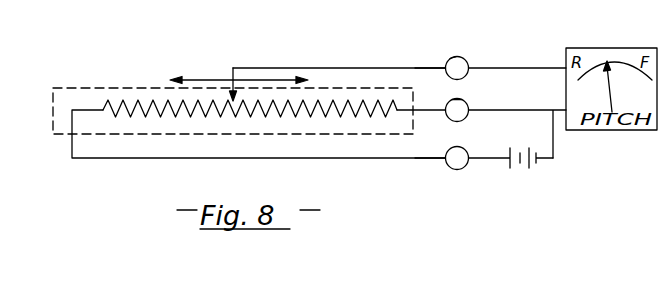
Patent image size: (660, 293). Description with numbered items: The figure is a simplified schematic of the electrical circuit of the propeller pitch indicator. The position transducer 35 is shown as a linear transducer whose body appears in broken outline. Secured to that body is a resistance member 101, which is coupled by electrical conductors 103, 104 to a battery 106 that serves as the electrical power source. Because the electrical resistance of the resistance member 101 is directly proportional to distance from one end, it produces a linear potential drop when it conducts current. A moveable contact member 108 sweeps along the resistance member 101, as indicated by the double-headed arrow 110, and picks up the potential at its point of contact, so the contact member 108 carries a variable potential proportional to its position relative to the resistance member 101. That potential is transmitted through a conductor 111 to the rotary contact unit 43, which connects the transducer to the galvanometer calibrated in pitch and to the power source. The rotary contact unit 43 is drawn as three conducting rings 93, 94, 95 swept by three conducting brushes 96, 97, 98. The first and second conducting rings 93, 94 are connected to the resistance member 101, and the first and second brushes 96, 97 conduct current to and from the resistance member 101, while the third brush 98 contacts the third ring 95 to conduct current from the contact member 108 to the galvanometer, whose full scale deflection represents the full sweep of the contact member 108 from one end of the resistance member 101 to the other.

The position transducer 35 is at (77, 88).
The rotary contact unit 43 is at (454, 52).
The first conducting ring 93 is at (445, 162).
The second conducting ring 94 is at (455, 99).
The third conducting ring 95 is at (445, 67).
The first conducting brush 96 is at (468, 167).
The second conducting brush 97 is at (468, 108).
The third conducting brush 98 is at (468, 66).
The resistance member 101 is at (128, 110).
The electrical conductor 103 is at (135, 158).
The electrical conductor 104 is at (422, 112).
The battery 106 is at (533, 172).
The moveable contact member 108 is at (231, 97).
The double-headed arrow 110 is at (192, 80).
The conductor 111 is at (322, 68).